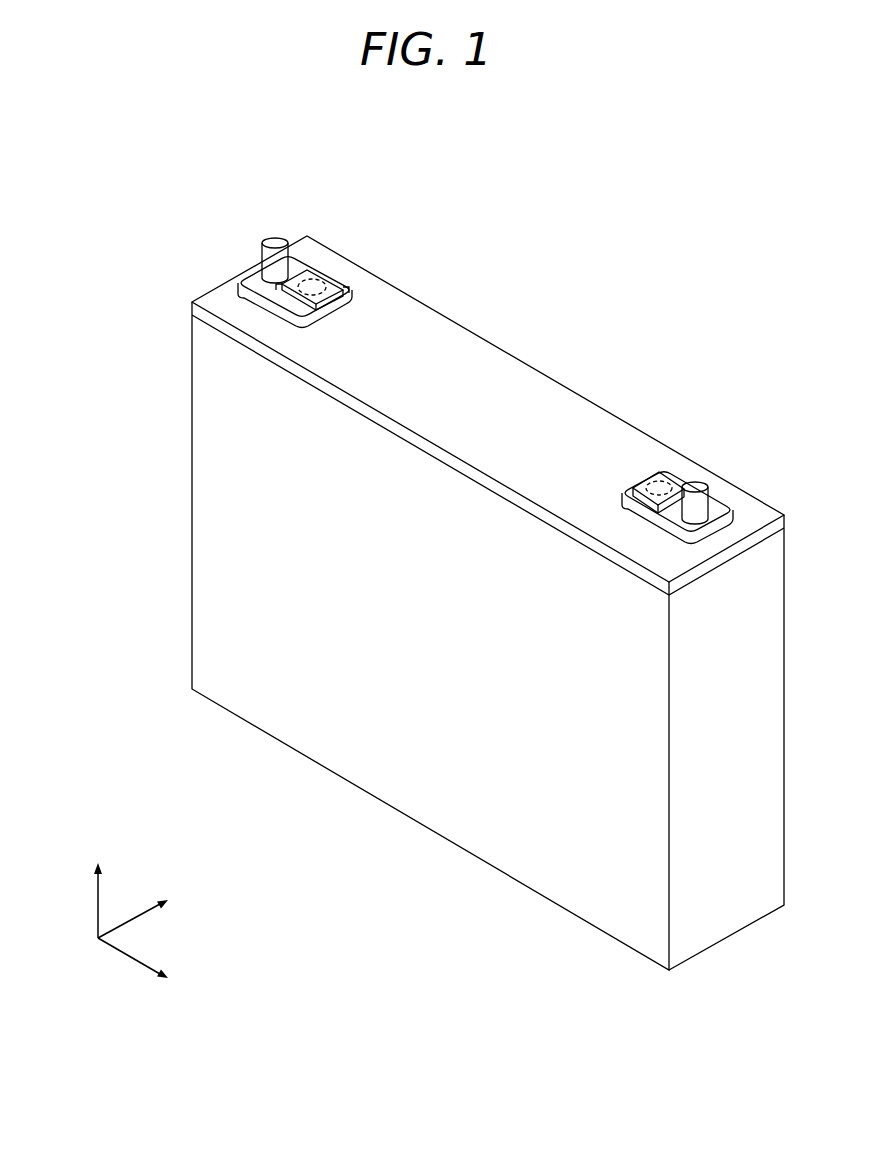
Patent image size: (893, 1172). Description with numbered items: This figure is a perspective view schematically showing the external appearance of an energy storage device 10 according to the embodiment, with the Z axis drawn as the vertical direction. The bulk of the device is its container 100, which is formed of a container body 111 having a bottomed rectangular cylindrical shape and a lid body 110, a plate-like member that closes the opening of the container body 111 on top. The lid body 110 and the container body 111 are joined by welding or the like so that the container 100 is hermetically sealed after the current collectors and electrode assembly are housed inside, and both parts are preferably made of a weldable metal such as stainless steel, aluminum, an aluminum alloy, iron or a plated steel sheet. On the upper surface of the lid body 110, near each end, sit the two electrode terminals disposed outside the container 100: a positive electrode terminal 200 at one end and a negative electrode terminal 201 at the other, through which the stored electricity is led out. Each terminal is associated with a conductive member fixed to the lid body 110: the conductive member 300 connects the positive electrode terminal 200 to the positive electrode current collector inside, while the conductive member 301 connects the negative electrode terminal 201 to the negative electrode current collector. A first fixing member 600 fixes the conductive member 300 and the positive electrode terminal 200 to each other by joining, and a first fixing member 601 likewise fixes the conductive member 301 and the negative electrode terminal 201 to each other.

The energy storage device 10 is at (672, 239).
The container 100 is at (117, 442).
The lid body 110 is at (380, 378).
The container body 111 is at (217, 505).
The positive electrode terminal 200 is at (695, 482).
The negative electrode terminal 201 is at (278, 236).
The conductive member 300 is at (645, 483).
The conductive member 301 is at (320, 282).
The first fixing member 600 is at (677, 478).
The first fixing member 601 is at (316, 272).